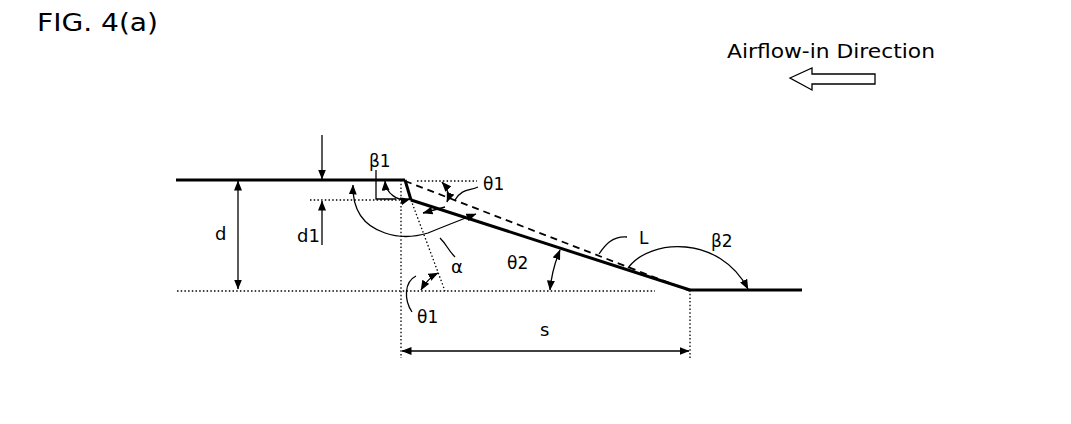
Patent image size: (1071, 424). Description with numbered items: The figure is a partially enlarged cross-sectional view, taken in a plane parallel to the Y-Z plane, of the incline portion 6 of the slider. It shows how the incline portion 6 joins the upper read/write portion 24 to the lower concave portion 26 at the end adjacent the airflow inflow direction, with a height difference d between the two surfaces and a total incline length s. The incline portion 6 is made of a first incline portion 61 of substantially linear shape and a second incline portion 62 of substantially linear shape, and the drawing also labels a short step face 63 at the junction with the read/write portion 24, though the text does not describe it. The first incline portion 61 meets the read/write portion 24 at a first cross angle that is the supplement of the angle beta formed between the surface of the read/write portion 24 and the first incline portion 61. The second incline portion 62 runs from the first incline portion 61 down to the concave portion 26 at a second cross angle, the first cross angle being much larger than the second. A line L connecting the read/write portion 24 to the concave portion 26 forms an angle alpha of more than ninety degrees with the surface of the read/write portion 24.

The read/write portion 24 is at (277, 178).
The concave portion 26 is at (789, 290).
The incline portion 6 is at (547, 207).
The first incline portion 61 is at (418, 181).
The second incline portion 62 is at (548, 238).
The step face 63 is at (391, 232).